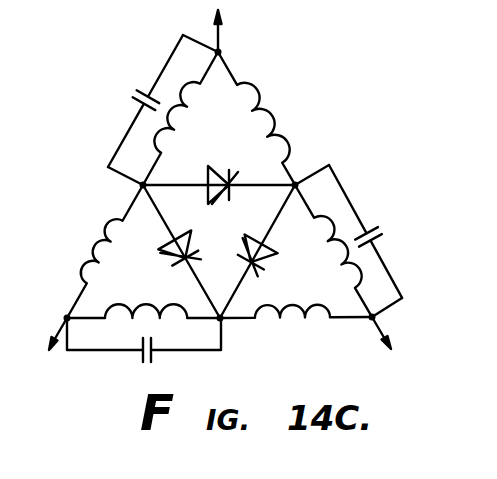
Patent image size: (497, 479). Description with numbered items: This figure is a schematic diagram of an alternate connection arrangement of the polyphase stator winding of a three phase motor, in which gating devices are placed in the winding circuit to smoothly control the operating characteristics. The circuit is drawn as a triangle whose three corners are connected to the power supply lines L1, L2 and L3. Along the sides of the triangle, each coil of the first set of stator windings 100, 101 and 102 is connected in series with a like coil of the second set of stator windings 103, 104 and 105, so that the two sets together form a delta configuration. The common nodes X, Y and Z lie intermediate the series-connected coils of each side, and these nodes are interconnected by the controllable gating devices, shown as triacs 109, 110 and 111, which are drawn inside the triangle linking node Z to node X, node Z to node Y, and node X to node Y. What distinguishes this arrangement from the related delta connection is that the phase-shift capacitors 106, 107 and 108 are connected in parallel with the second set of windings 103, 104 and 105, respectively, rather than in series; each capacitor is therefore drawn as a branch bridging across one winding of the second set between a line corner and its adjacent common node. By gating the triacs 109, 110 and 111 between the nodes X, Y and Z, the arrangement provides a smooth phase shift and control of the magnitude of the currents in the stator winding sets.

The stator winding 100 is at (276, 117).
The stator winding 101 is at (280, 319).
The stator winding 102 is at (104, 232).
The stator winding 103 is at (347, 263).
The stator winding 104 is at (147, 303).
The stator winding 105 is at (186, 110).
The phase-shift capacitor 106 is at (382, 230).
The phase-shift capacitor 107 is at (150, 362).
The phase-shift capacitor 108 is at (131, 93).
The triac 109 is at (163, 257).
The triac 110 is at (213, 165).
The triac 111 is at (264, 264).
The common node X is at (298, 176).
The common node Y is at (222, 320).
The common node Z is at (137, 186).
The power supply line L1 is at (232, 31).
The power supply line L2 is at (392, 333).
The power supply line L3 is at (48, 334).